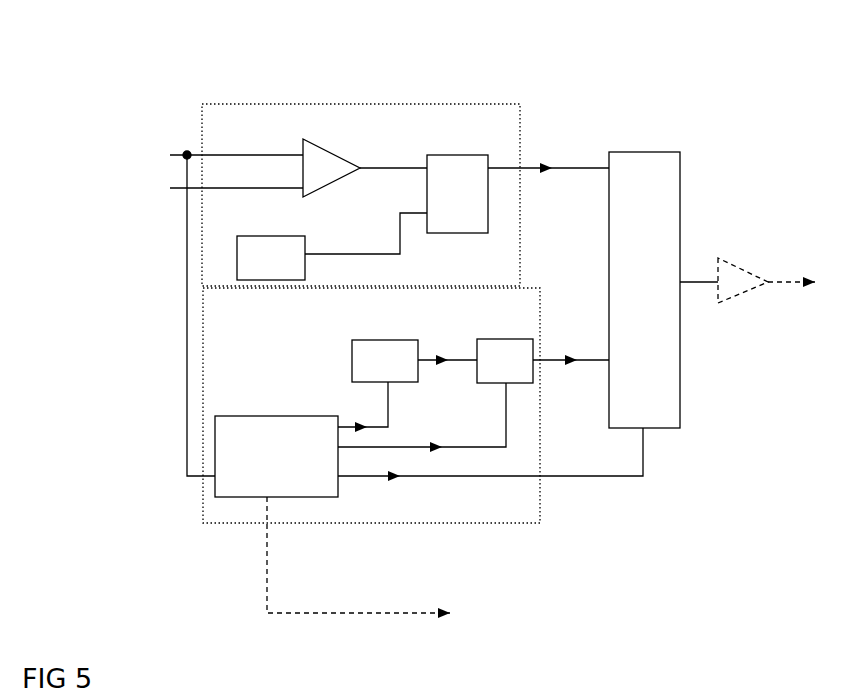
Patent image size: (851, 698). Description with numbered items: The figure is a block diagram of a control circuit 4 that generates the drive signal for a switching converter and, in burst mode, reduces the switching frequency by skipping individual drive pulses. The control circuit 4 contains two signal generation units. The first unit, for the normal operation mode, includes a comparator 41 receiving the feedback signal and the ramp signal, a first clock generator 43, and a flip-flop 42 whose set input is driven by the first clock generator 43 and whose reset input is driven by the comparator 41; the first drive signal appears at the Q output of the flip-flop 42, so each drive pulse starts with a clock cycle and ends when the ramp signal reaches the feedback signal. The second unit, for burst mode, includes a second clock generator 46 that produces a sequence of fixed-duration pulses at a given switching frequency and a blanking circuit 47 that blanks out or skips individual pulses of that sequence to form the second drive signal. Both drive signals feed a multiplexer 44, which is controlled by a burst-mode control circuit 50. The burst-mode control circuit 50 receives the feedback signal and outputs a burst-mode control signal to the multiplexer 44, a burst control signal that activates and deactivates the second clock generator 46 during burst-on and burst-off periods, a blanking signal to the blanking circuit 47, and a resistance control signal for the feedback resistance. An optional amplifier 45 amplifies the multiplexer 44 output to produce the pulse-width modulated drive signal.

The control circuit 4 is at (530, 56).
The comparator 41 is at (337, 155).
The flip-flop 42 is at (460, 155).
The first clock generator 43 is at (256, 236).
The multiplexer 44 is at (632, 152).
The amplifier 45 is at (743, 268).
The second clock generator 46 is at (380, 340).
The blanking circuit 47 is at (500, 339).
The burst-mode control circuit 50 is at (262, 416).